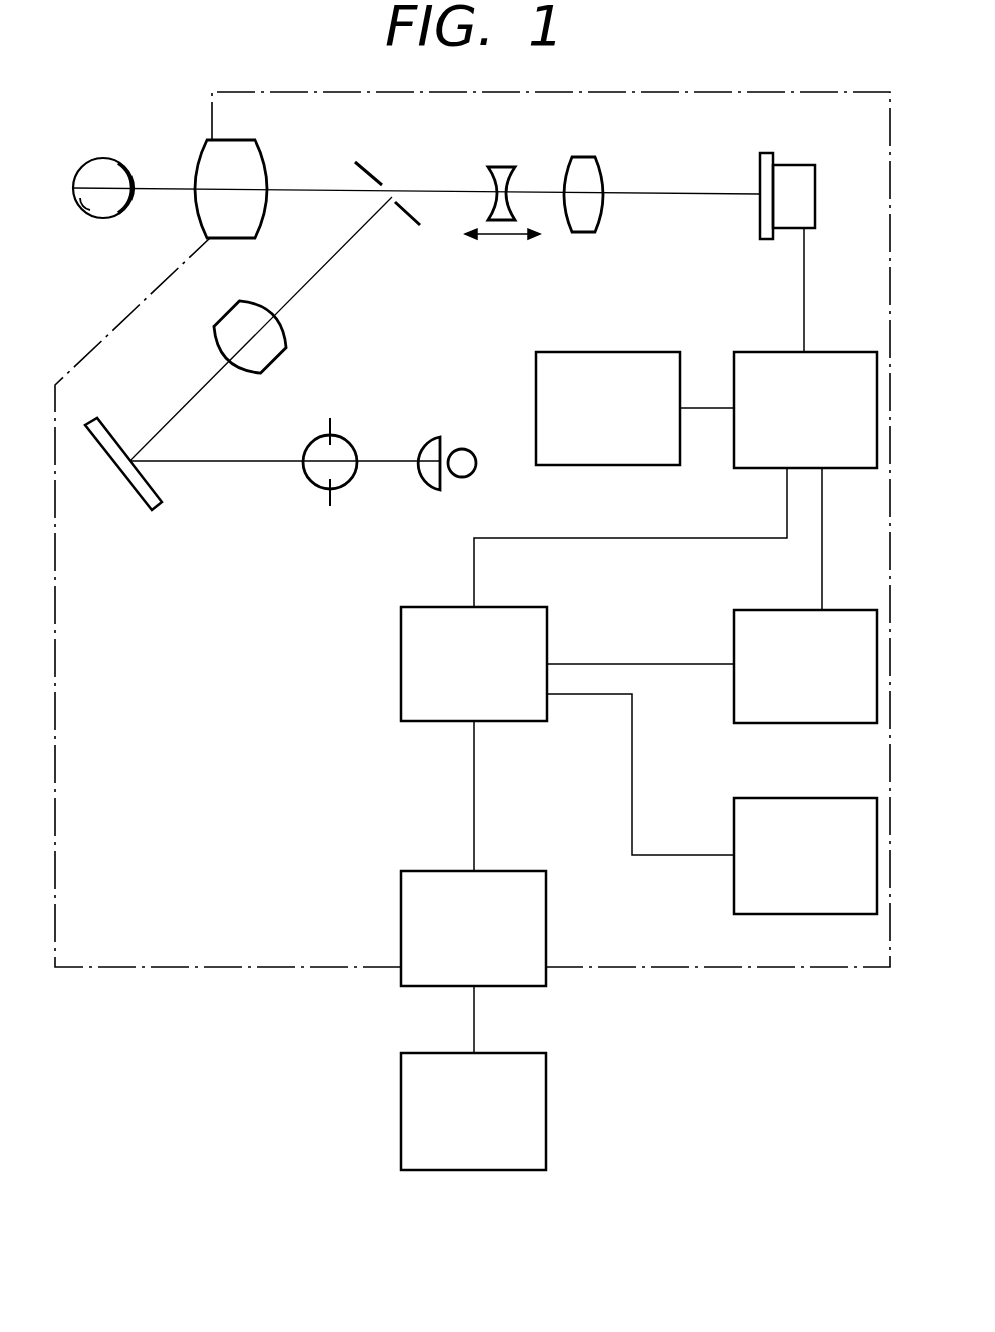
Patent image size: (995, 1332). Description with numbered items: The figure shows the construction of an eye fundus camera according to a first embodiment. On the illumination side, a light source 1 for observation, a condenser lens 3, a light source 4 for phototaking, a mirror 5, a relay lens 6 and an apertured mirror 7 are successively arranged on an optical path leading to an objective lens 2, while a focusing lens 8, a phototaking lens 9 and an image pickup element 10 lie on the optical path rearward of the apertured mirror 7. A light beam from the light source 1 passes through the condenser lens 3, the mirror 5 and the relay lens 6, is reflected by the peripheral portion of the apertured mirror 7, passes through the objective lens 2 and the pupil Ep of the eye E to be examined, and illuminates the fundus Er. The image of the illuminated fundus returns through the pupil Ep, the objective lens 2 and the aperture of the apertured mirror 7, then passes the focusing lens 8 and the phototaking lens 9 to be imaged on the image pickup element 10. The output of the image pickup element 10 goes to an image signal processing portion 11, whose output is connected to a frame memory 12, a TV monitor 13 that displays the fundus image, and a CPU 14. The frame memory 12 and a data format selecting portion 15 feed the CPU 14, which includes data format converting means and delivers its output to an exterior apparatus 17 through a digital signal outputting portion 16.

The eye to be examined E is at (86, 162).
The pupil Ep is at (135, 186).
The fundus Er is at (88, 211).
The light source for observation 1 is at (470, 452).
The objective lens 2 is at (250, 140).
The condenser lens 3 is at (432, 437).
The light source for phototaking 4 is at (343, 440).
The mirror 5 is at (108, 428).
The relay lens 6 is at (286, 336).
The apertured mirror 7 is at (375, 171).
The focusing lens 8 is at (508, 167).
The phototaking lens 9 is at (590, 157).
The image pickup element 10 is at (800, 165).
The image signal processing portion 11 is at (836, 352).
The frame memory 12 is at (840, 610).
The TV monitor 13 is at (655, 352).
The CPU 14 is at (518, 607).
The data format selecting portion 15 is at (840, 798).
The digital signal outputting portion 16 is at (518, 871).
The exterior apparatus 17 is at (518, 1053).